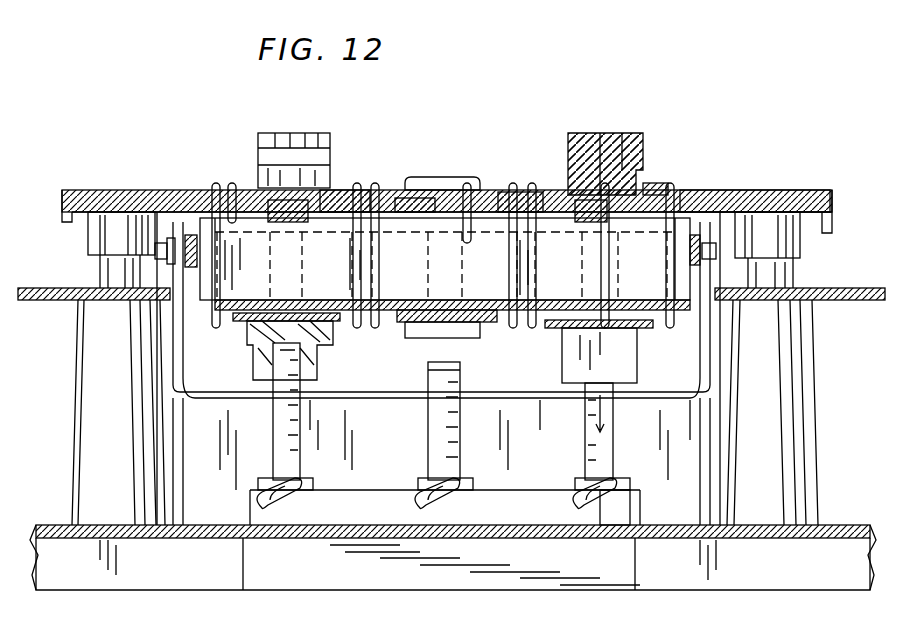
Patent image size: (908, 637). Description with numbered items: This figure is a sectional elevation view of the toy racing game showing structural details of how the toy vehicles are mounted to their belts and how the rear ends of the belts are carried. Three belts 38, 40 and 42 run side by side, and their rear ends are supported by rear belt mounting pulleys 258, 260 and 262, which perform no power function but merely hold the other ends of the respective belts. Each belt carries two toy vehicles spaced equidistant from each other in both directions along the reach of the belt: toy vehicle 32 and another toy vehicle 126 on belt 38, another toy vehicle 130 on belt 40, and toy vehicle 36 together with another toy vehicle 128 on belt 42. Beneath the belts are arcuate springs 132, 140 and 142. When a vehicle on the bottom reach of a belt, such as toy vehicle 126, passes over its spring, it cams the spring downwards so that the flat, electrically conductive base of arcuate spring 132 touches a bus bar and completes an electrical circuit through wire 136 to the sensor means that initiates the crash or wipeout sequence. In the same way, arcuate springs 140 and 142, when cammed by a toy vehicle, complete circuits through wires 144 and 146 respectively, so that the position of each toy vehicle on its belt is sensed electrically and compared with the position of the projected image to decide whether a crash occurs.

The toy vehicle 32 is at (643, 158).
The toy vehicle 36 is at (335, 147).
The belt 38 is at (660, 190).
The belt 40 is at (490, 186).
The belt 42 is at (342, 186).
The another toy vehicle 126 is at (620, 367).
The another toy vehicle 128 is at (312, 370).
The another toy vehicle 130 is at (462, 160).
The arcuate spring 132 is at (612, 456).
The wire 136 is at (630, 503).
The arcuate spring 140 is at (449, 461).
The arcuate spring 142 is at (298, 448).
The wire 144 is at (458, 500).
The wire 146 is at (270, 500).
The rear belt mounting pulley 258 is at (683, 190).
The rear belt mounting pulley 260 is at (506, 186).
The rear belt mounting pulley 262 is at (232, 190).